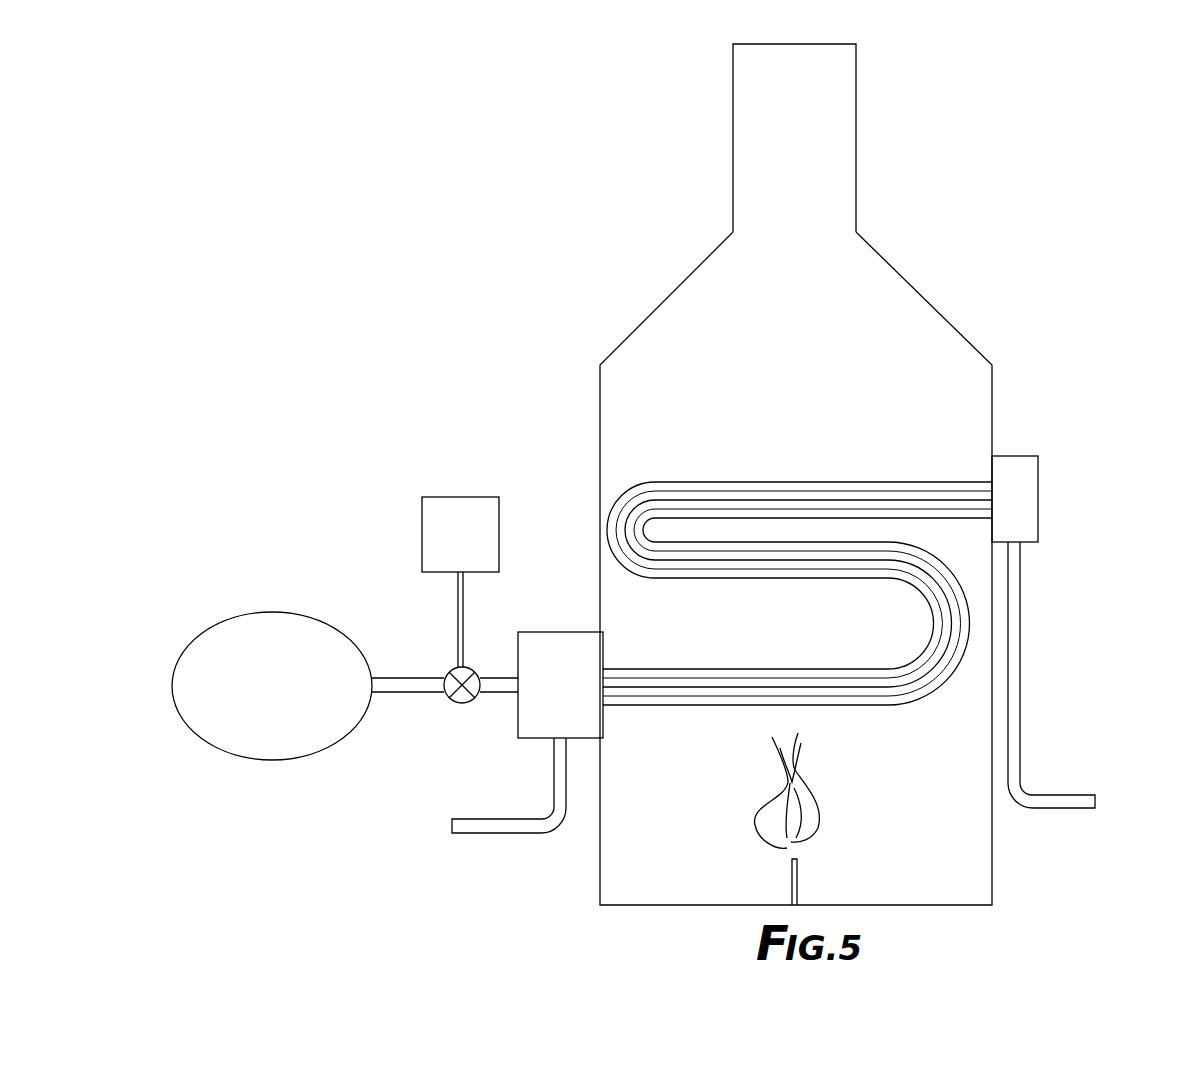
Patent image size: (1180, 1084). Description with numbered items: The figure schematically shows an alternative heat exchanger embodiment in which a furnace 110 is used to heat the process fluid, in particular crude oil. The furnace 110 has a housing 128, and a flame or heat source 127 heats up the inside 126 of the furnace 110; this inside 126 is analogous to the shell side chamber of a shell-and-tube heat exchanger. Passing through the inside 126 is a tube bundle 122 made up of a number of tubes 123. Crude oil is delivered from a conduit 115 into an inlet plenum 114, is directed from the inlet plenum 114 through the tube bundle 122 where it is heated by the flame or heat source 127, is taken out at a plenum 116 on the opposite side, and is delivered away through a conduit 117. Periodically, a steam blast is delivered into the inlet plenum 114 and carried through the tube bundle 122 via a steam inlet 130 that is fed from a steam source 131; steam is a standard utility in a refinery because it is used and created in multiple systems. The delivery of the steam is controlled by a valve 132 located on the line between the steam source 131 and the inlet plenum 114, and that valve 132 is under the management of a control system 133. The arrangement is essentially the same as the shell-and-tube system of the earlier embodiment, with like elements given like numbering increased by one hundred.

The furnace 110 is at (882, 474).
The inlet plenum 114 is at (580, 702).
The conduit 115 is at (505, 833).
The plenum 116 is at (1035, 512).
The conduit 117 is at (1020, 617).
The tube bundle 122 is at (797, 559).
The tubes 123 is at (862, 493).
The inside of the furnace 126 is at (807, 337).
The flame or heat source 127 is at (797, 867).
The housing 128 is at (856, 83).
The steam inlet 130 is at (510, 677).
The steam source 131 is at (247, 630).
The valve 132 is at (450, 703).
The control system 133 is at (452, 508).